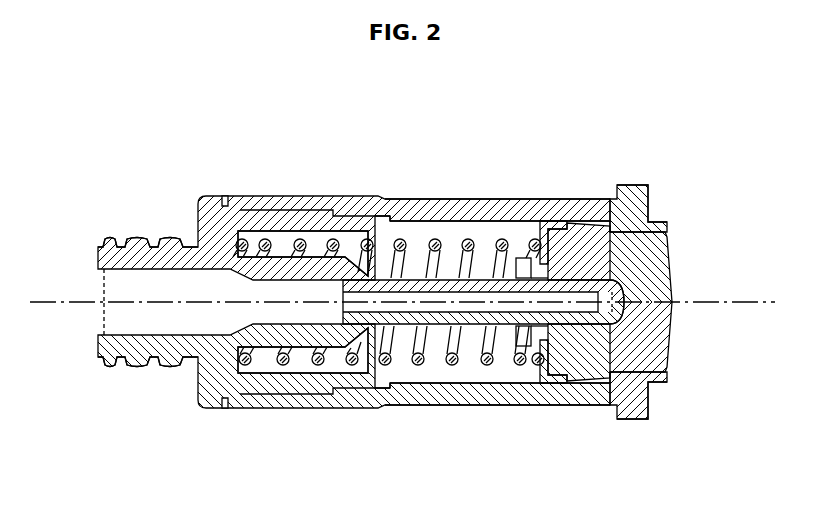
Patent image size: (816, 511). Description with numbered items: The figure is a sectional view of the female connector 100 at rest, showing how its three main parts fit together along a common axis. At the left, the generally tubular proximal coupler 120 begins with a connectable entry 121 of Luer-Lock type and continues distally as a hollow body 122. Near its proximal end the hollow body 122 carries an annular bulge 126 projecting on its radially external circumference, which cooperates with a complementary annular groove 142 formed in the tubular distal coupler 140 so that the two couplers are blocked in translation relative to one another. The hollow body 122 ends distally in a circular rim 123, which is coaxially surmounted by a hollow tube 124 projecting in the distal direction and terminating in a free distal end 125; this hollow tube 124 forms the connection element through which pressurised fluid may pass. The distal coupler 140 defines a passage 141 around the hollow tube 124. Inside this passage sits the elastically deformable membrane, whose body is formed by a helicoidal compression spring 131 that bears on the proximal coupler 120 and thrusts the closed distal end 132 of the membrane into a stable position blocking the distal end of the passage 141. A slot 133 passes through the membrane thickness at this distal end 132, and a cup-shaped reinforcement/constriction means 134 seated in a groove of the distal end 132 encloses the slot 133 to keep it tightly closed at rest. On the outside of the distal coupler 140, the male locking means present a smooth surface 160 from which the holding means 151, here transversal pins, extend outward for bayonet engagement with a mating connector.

The female connector 100 is at (160, 110).
The proximal coupler 120 is at (145, 252).
The connectable entry 121 is at (143, 354).
The hollow body 122 is at (310, 347).
The rim 123 is at (205, 199).
The hollow tube 124 is at (410, 283).
The free distal end 125 is at (578, 284).
The annular bulge 126 is at (262, 211).
The spring 131 is at (457, 343).
The distal end of the membrane 132 is at (600, 350).
The slot 133 is at (658, 318).
The reinforcement/constriction means 134 is at (543, 200).
The distal coupler 140 is at (463, 397).
The passage 141 is at (456, 232).
The annular groove 142 is at (252, 200).
The holding means 151 is at (636, 191).
The smooth surface 160 is at (580, 194).